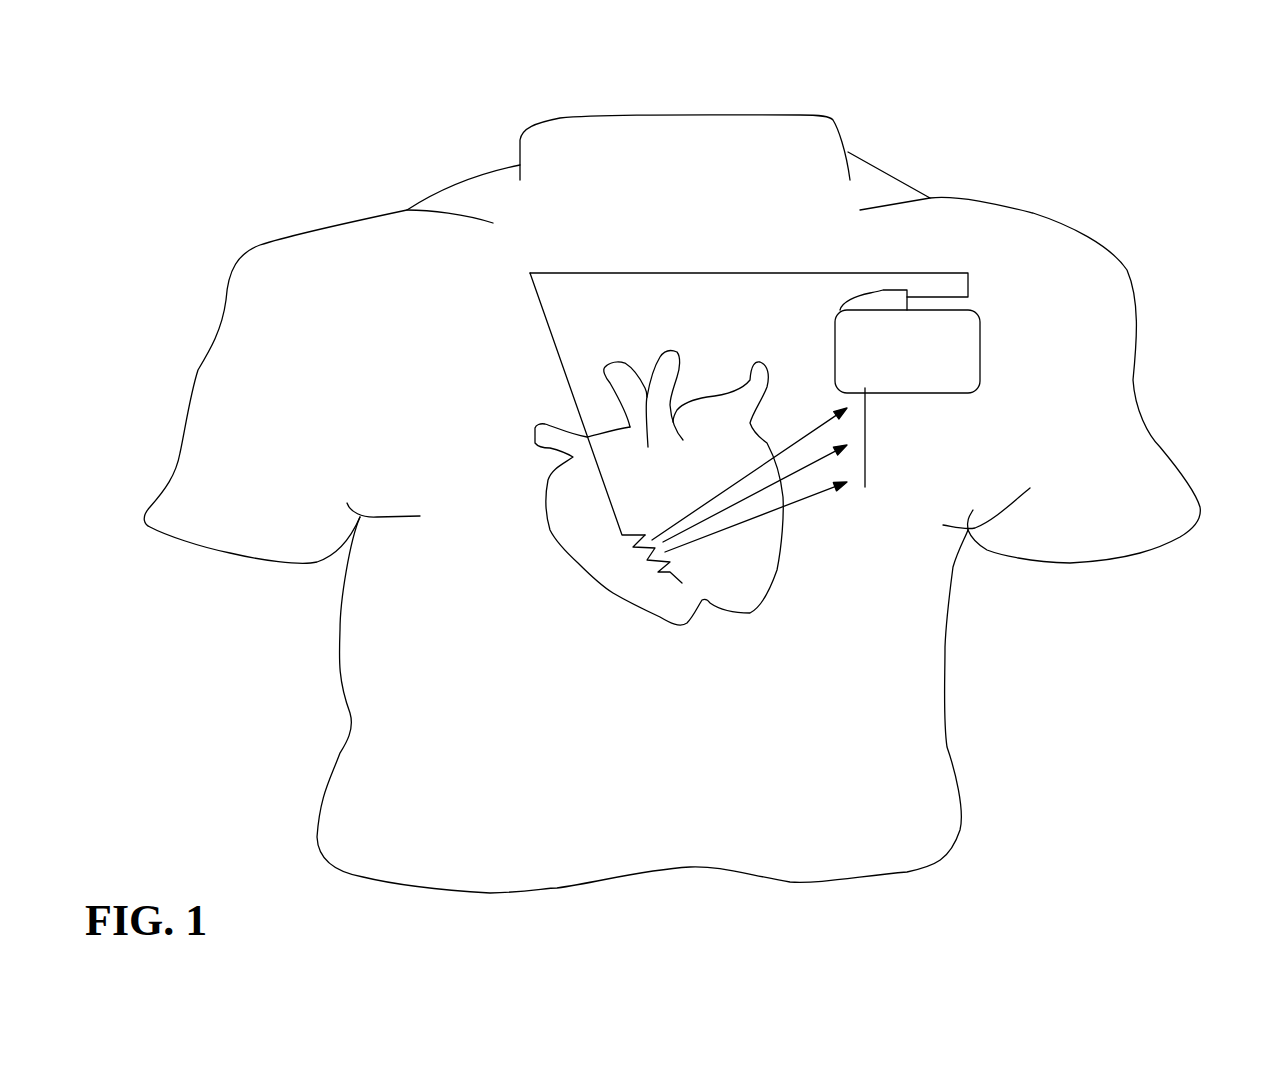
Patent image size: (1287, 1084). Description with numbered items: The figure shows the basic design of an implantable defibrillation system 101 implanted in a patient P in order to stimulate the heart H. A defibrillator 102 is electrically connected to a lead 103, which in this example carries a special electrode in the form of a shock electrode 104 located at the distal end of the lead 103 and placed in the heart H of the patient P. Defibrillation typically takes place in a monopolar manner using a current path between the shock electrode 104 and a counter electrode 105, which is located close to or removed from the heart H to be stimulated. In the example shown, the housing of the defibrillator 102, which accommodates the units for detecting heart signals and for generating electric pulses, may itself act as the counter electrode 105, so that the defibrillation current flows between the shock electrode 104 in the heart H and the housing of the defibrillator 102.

The implantable defibrillation system 101 is at (796, 349).
The defibrillator 102 is at (982, 320).
The lead 103 is at (688, 272).
The shock electrode 104 is at (637, 542).
The counter electrode 105 is at (865, 455).
The heart H is at (598, 592).
The patient P is at (932, 773).